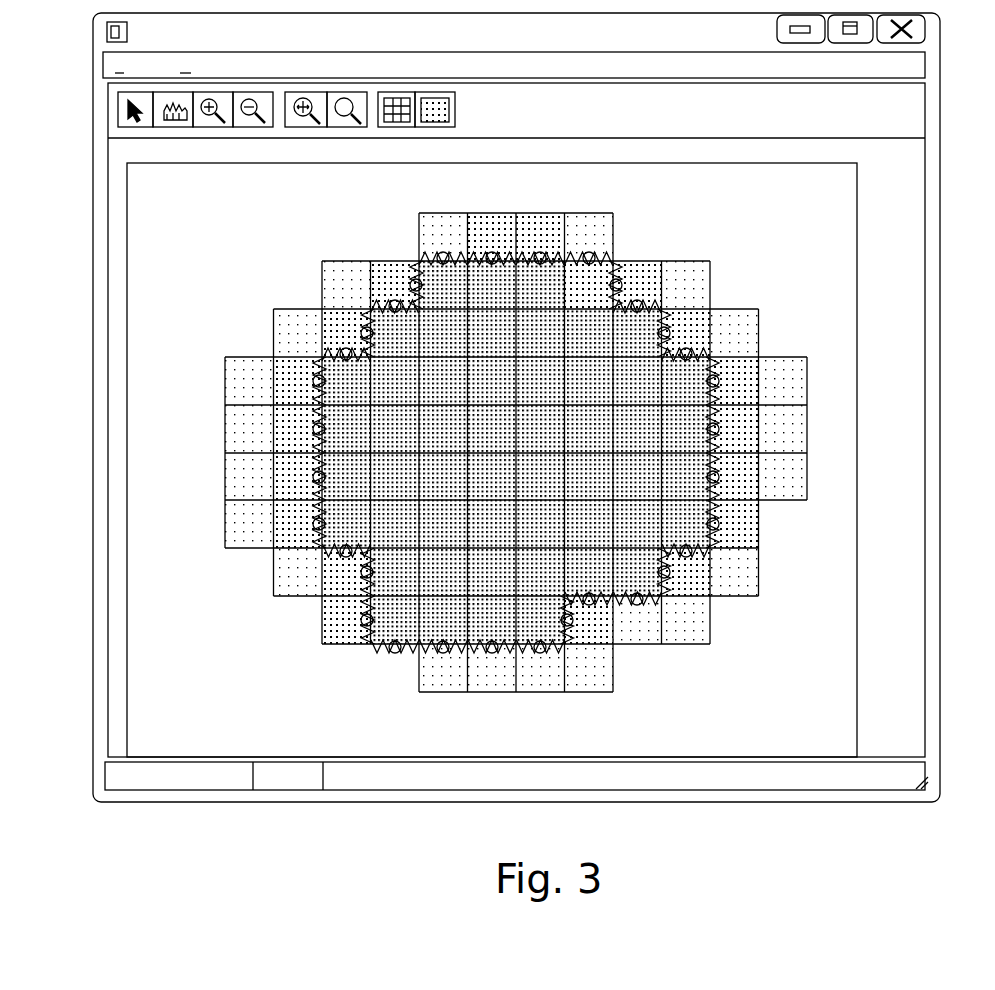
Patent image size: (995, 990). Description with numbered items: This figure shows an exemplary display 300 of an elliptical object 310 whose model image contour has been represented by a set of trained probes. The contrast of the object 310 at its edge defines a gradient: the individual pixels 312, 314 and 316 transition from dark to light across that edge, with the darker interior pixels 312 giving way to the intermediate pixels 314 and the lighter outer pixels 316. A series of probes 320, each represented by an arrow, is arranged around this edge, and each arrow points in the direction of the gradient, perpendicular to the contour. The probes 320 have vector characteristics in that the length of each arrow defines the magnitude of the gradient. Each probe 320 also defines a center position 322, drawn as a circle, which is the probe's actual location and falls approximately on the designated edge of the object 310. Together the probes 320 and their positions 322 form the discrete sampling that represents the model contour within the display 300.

The display 300 is at (192, 643).
The elliptical object 310 is at (494, 483).
The pixel 312 is at (337, 490).
The pixel 314 is at (277, 507).
The pixel 316 is at (233, 492).
The probe 320 is at (268, 485).
The center position 322 is at (268, 413).